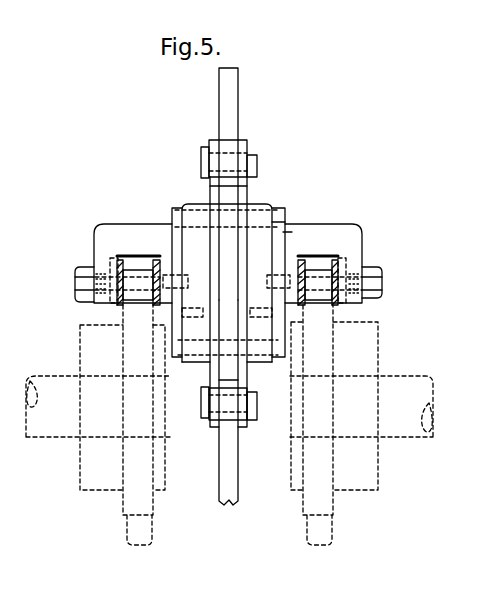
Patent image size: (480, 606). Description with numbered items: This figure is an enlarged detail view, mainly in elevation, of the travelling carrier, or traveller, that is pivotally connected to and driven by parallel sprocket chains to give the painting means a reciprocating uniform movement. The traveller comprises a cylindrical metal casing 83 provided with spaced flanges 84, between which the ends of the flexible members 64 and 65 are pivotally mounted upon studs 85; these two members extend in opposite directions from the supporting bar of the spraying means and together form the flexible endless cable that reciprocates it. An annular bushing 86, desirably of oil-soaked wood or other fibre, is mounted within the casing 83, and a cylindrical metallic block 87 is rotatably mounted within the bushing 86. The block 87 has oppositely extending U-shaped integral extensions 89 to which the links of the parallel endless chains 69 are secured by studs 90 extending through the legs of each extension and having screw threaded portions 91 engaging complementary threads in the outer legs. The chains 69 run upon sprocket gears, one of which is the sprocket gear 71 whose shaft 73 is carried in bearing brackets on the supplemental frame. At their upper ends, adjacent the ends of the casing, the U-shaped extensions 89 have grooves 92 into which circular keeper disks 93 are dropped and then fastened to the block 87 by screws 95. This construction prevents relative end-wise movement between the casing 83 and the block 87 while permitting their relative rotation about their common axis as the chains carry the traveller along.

The flexible member 64 is at (234, 487).
The flexible member 65 is at (234, 91).
The endless chains 69 is at (122, 306).
The sprocket gear 71 is at (123, 507).
The shaft 73 is at (60, 430).
The cylindrical metal casing 83 is at (258, 200).
The spaced flanges 84 is at (210, 141).
The studs 85 is at (257, 162).
The annular bushing 86 is at (194, 207).
The cylindrical metallic block 87 is at (182, 224).
The U-shaped extensions 89 is at (110, 231).
The studs 90 is at (374, 267).
The screw threaded portions 91 is at (380, 282).
The grooves 92 is at (280, 222).
The keeper disks 93 is at (288, 232).
The screws 95 is at (306, 330).